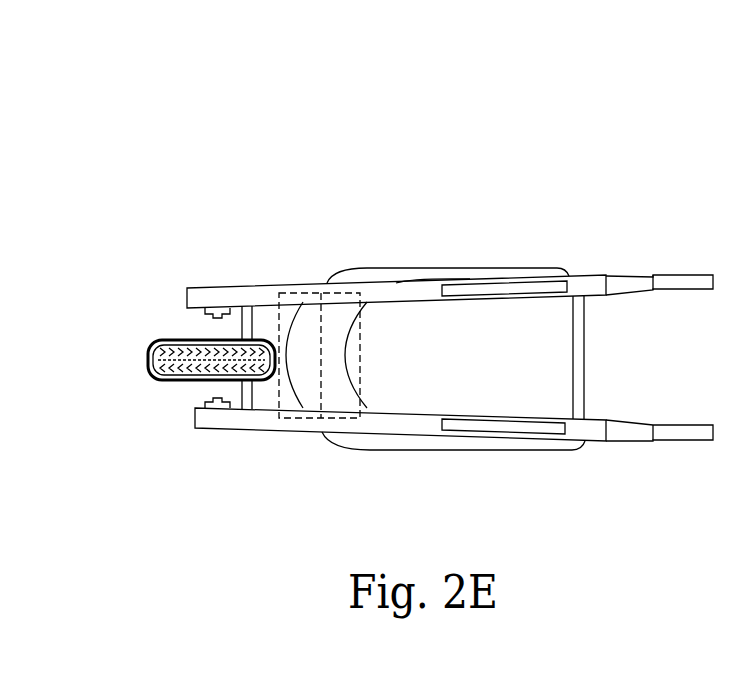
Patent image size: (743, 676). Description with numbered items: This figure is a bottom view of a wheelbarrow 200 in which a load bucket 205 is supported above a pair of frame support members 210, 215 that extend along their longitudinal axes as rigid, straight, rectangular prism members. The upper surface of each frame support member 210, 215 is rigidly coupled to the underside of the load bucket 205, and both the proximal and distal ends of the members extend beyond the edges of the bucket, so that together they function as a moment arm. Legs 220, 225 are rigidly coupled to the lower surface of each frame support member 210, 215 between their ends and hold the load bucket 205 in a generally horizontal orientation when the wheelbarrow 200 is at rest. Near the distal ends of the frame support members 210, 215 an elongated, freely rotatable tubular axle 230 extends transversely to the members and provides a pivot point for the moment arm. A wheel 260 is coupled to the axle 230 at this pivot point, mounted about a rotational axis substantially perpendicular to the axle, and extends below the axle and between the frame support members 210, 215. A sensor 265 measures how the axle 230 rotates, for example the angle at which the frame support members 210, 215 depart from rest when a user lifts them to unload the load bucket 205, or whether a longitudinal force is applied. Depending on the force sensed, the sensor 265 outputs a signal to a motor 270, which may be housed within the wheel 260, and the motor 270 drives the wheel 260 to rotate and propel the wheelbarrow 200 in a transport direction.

The wheelbarrow 200 is at (555, 92).
The load bucket 205 is at (477, 366).
The frame support member 210 is at (592, 275).
The frame support member 215 is at (592, 441).
The leg 220 is at (515, 283).
The leg 225 is at (497, 438).
The axle 230 is at (242, 333).
The wheel 260 is at (147, 356).
The sensor 265 is at (205, 311).
The motor 270 is at (300, 288).